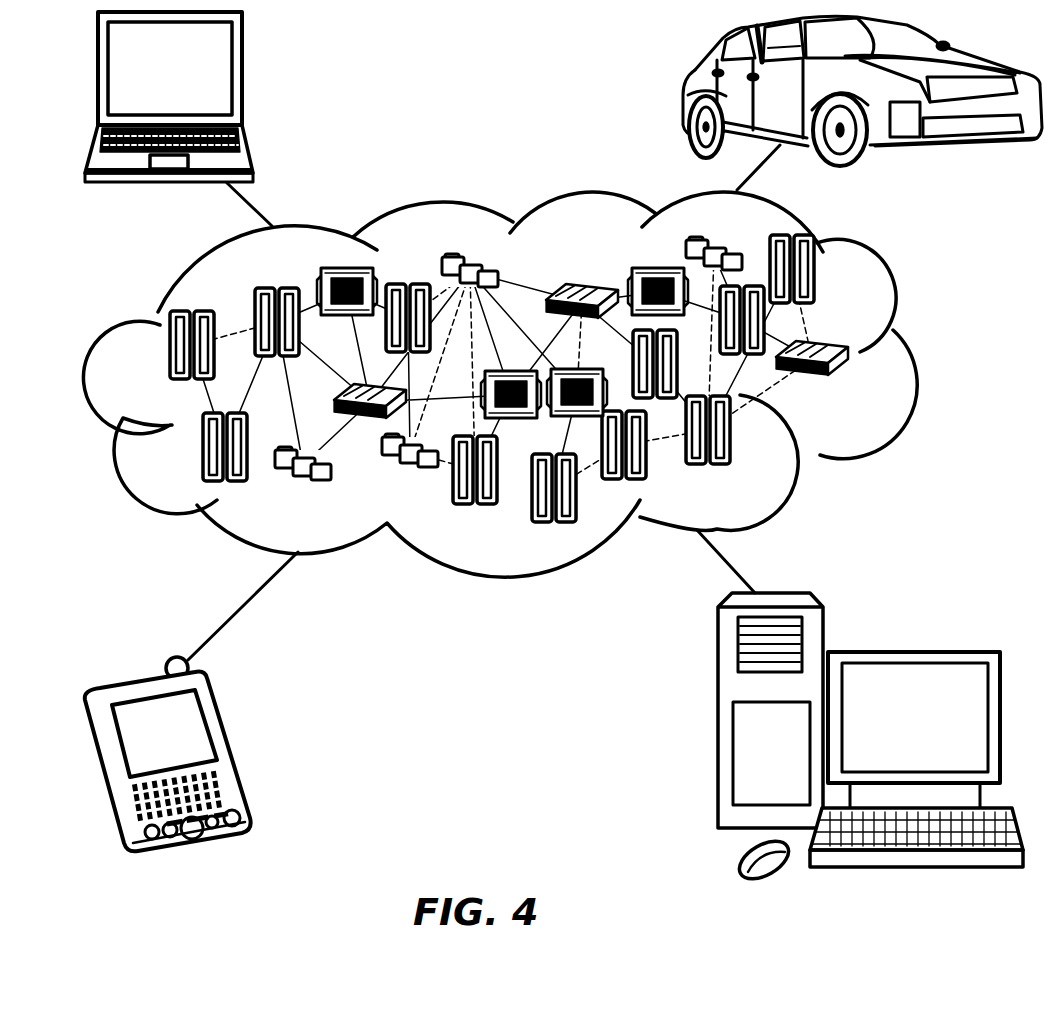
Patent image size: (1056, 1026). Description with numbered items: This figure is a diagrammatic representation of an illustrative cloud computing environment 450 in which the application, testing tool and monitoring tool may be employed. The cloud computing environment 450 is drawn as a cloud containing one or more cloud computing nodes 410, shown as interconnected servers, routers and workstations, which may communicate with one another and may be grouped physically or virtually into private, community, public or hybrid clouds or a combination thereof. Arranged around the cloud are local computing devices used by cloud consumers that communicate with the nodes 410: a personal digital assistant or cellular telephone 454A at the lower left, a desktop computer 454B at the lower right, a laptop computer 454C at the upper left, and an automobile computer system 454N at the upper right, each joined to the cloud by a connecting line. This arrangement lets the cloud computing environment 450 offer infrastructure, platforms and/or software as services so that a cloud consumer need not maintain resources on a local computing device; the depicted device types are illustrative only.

The laptop computer 454C is at (240, 73).
The automobile computer system 454N is at (692, 93).
The cloud computing environment 450 is at (915, 356).
The cloud computing nodes 410 is at (866, 389).
The personal digital assistant (PDA) or cellular telephone 454A is at (230, 750).
The desktop computer 454B is at (913, 652).